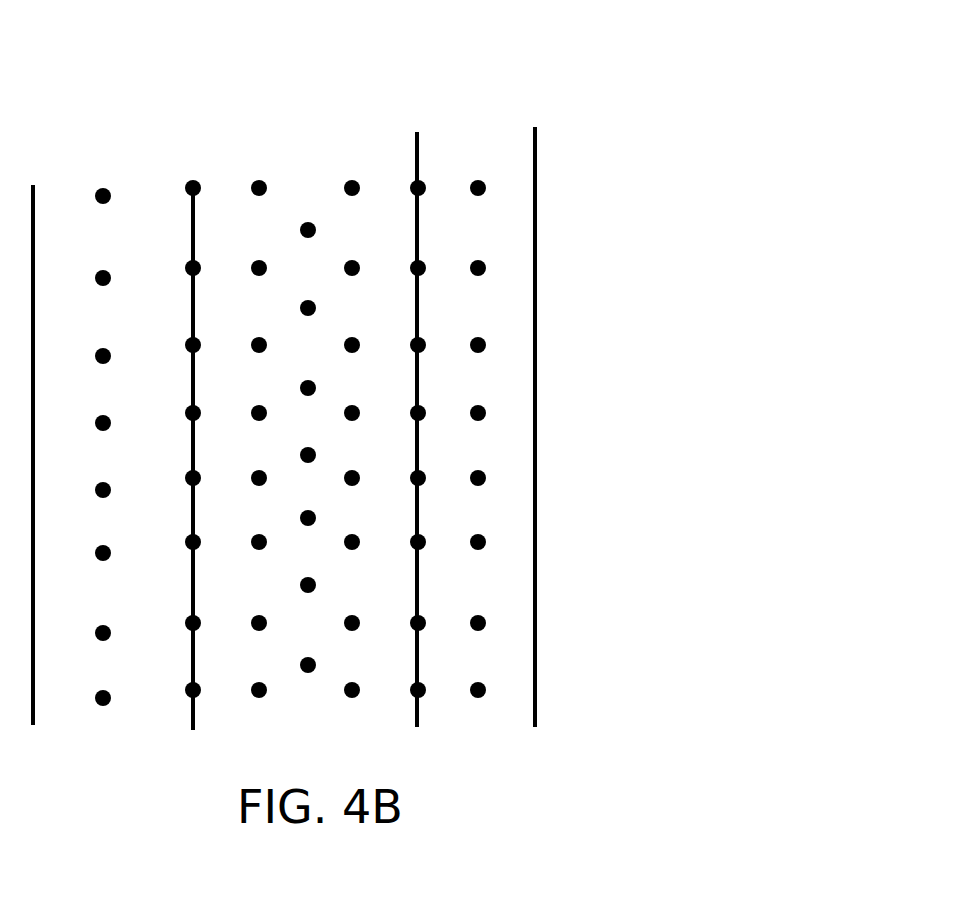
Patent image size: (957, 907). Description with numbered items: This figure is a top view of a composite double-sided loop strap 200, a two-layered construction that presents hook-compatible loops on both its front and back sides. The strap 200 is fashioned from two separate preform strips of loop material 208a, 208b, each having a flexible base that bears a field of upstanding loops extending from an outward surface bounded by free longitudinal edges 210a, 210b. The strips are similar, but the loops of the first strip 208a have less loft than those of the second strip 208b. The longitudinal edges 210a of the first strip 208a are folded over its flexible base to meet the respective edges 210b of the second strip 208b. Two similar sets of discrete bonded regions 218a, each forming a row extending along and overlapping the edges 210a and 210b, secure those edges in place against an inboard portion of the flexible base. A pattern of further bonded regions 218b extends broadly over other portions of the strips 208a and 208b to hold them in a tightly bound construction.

The double-sided loop strap 200 is at (580, 108).
The first preform strip of loop material 208a is at (507, 345).
The second preform strip of loop material 208b is at (382, 187).
The free longitudinal edges of first strip 210a is at (193, 216).
The free longitudinal edges of second strip 210b is at (193, 242).
The discrete bonded regions 218a is at (420, 537).
The bonded regions 218b is at (478, 617).